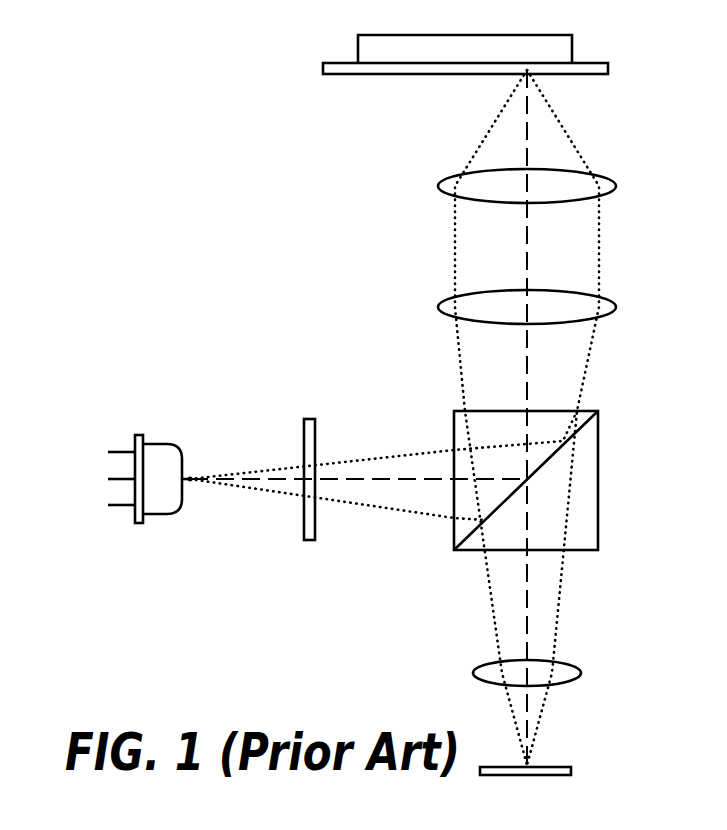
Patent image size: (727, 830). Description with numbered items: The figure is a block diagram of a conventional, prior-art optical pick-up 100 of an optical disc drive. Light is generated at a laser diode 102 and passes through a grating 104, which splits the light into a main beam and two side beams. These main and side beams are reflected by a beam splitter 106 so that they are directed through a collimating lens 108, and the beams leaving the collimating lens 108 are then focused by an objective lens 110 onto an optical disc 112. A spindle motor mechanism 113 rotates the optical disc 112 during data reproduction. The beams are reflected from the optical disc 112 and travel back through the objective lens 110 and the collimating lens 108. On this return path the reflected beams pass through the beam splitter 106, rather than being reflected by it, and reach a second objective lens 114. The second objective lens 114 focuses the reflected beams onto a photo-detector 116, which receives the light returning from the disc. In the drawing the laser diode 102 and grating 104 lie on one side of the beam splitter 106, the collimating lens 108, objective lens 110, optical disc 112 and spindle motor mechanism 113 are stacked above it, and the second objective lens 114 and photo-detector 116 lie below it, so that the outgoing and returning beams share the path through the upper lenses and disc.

The optical pick-up 100 is at (155, 183).
The laser diode 102 is at (161, 443).
The grating 104 is at (309, 418).
The beam splitter 106 is at (601, 480).
The collimating lens 108 is at (437, 307).
The objective lens 110 is at (437, 185).
The optical disc 112 is at (353, 76).
The spindle motor mechanism 113 is at (576, 50).
The second objective lens 114 is at (583, 673).
The photo-detector 116 is at (565, 766).